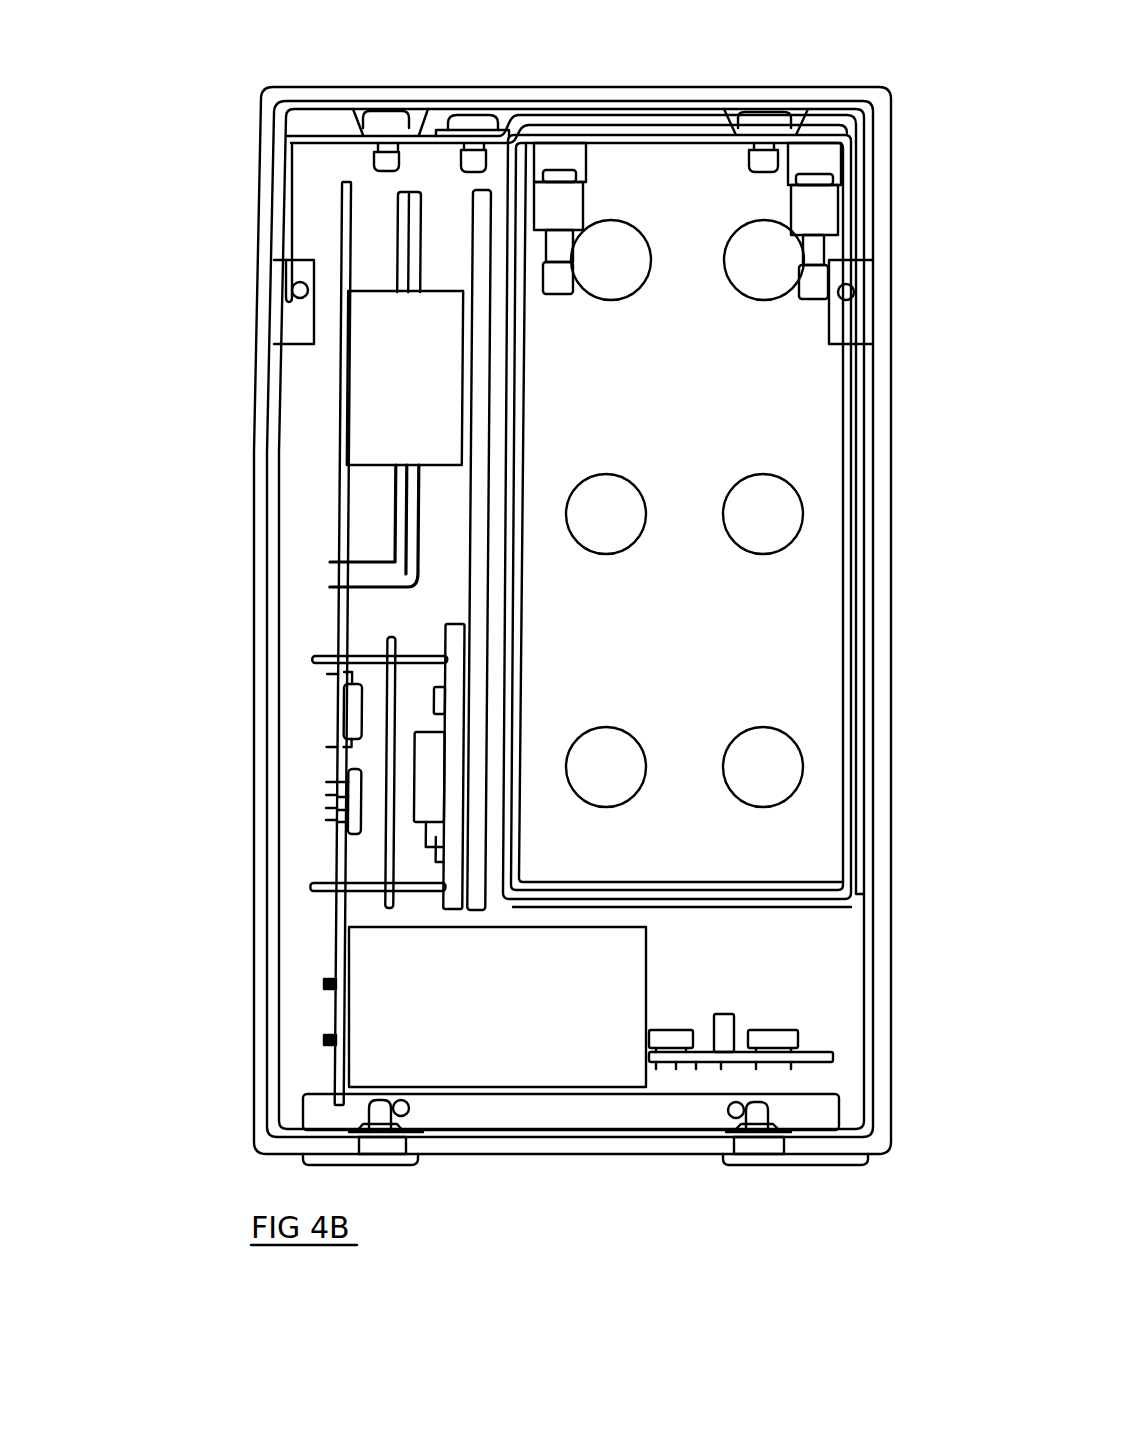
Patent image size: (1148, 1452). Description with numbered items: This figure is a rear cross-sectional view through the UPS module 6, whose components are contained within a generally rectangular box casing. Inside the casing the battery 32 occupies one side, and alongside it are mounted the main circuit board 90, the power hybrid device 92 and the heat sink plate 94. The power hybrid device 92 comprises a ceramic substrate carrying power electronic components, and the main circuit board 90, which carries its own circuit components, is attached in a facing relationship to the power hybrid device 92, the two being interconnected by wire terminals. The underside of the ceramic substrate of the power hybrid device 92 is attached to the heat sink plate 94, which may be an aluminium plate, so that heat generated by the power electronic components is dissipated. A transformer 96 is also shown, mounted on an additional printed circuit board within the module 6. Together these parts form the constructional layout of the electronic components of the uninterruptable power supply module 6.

The UPS module 6 is at (222, 137).
The battery 32 is at (787, 408).
The main circuit board 90 is at (337, 511).
The power hybrid device 92 is at (465, 868).
The heat sink plate 94 is at (468, 606).
The transformer 96 is at (375, 389).